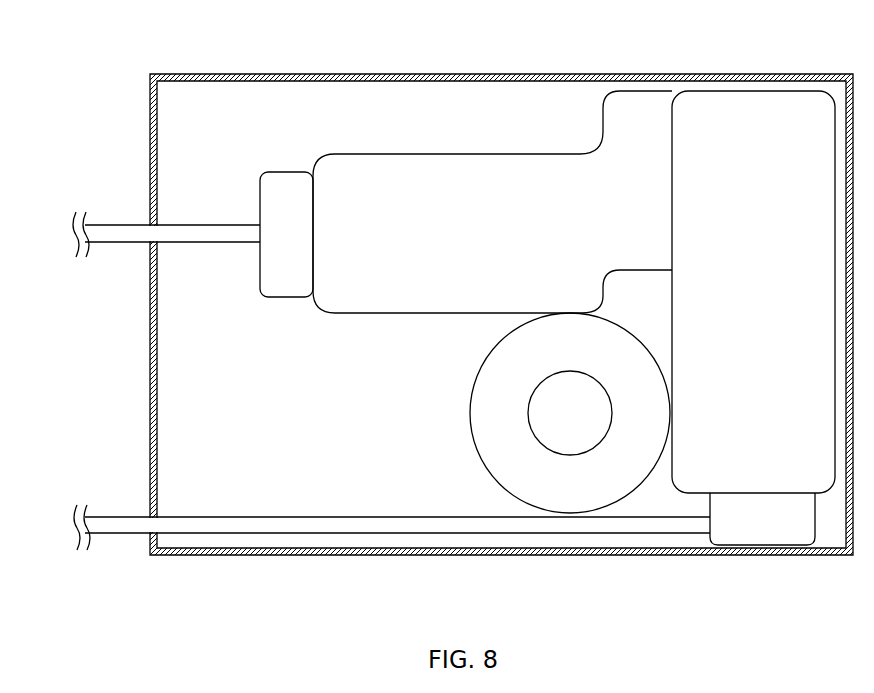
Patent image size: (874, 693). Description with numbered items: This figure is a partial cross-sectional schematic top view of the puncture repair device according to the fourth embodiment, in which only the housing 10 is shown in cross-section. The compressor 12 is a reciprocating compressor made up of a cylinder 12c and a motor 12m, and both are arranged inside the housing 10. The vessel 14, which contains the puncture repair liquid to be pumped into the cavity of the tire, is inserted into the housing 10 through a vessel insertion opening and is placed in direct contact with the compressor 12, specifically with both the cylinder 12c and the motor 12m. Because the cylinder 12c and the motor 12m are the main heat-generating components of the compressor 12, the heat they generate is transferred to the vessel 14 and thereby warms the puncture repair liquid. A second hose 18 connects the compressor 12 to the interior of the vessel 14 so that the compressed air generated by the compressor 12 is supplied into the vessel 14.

The housing 10 is at (797, 75).
The compressor 12 is at (440, 274).
The motor 12m is at (418, 200).
The cylinder 12c is at (715, 128).
The vessel 14 is at (572, 503).
The second hose 18 is at (113, 535).